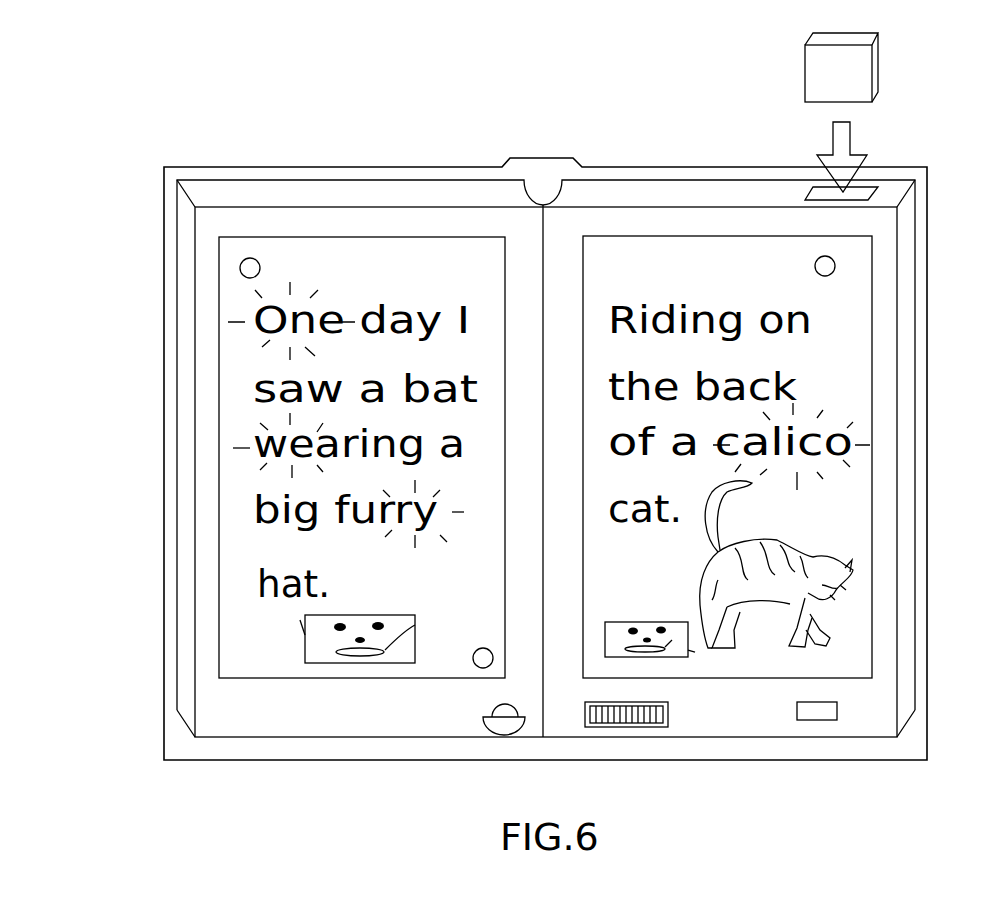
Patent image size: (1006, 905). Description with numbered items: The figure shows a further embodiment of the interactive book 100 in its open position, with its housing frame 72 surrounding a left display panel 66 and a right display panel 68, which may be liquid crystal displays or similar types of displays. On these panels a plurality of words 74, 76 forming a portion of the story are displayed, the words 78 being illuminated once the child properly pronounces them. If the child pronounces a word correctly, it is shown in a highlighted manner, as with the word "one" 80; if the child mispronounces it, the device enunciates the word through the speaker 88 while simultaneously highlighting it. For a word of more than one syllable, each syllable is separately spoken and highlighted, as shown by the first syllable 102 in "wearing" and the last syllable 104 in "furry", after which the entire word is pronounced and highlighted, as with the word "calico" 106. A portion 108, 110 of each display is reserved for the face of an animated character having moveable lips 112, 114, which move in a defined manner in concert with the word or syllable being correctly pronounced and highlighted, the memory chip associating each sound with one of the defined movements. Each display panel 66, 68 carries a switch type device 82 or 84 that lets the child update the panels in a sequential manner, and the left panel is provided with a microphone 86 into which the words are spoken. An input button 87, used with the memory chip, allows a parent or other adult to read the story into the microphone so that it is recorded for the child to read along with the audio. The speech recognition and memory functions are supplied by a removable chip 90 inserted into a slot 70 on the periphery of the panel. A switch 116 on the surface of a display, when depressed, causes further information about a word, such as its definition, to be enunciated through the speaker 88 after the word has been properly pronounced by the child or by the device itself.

The electronic book device 100 is at (447, 130).
The housing frame 72 is at (917, 354).
The left display panel 66 is at (358, 258).
The right display panel 68 is at (697, 257).
The switch type device 82 is at (250, 257).
The switch type device 84 is at (835, 264).
The highlighted word "one" 80 is at (252, 338).
The first syllable 102 is at (250, 460).
The last syllable 104 is at (427, 540).
The words 78 is at (466, 398).
The word "calico" 106 is at (862, 436).
The plurality of words 74 is at (457, 605).
The plurality of words 76 is at (642, 612).
The animated character display portion 108 is at (305, 638).
The moveable lips 112 is at (415, 625).
The moveable lips 114 is at (665, 647).
The animated character display portion 110 is at (690, 650).
The switch 116 is at (474, 665).
The microphone 86 is at (483, 733).
The speaker 88 is at (673, 727).
The input button 87 is at (837, 720).
The chip 90 is at (872, 62).
The slot 70 is at (873, 197).